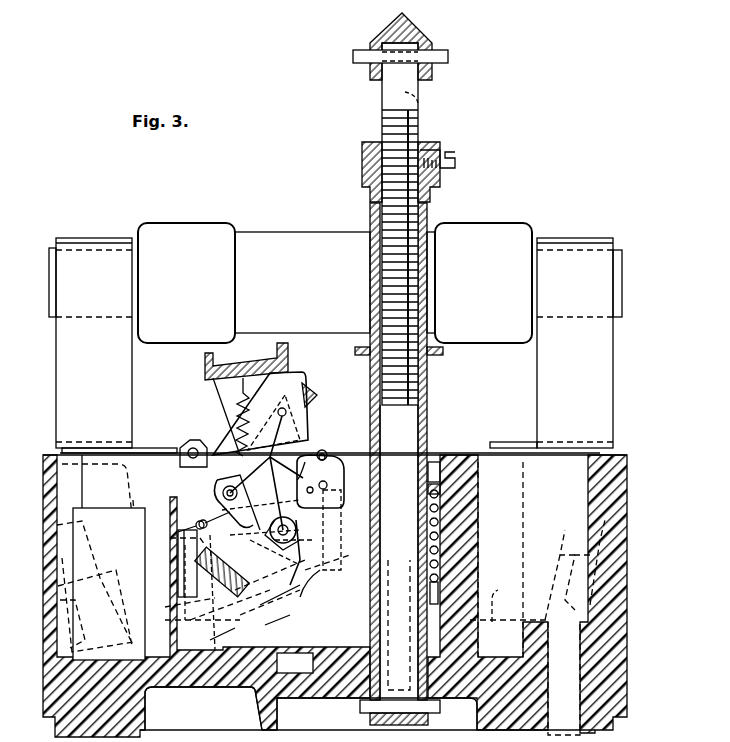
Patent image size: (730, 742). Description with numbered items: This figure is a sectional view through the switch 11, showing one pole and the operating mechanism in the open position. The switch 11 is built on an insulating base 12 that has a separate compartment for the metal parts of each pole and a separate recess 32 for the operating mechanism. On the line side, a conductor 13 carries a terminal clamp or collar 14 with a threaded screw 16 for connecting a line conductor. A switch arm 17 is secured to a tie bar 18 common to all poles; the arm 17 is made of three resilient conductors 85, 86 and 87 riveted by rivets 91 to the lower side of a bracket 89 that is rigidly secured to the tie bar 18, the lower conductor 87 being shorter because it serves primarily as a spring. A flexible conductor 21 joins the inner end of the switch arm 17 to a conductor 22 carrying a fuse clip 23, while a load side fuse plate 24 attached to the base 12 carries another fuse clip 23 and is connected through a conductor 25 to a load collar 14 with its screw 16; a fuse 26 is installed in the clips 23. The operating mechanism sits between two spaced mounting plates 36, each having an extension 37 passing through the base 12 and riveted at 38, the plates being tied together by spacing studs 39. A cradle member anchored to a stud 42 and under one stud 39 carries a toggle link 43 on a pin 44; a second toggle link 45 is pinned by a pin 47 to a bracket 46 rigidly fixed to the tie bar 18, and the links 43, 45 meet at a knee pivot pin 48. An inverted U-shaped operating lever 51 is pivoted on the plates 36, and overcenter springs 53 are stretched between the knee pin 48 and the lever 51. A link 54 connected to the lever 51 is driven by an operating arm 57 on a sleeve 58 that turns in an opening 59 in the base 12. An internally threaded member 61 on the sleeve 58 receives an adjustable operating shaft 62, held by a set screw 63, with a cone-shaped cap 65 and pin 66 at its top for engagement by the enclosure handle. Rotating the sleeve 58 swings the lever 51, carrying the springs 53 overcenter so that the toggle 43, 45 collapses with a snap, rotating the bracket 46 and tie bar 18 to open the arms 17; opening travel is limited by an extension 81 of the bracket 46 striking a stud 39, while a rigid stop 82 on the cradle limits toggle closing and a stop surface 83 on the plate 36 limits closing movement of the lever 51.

The switch 11 is at (501, 386).
The insulating base 12 is at (618, 695).
The conductor 13 is at (488, 606).
The terminal clamp or collar 14 is at (110, 532).
The threaded screw 16 is at (92, 540).
The switch arm 17 is at (160, 634).
The tie bar 18 is at (225, 585).
The flexible conductor 21 is at (180, 538).
The conductor 22 is at (472, 440).
The fuse clip 23 is at (62, 362).
The load side fuse terminal or plate 24 is at (158, 448).
The conductor 25 is at (116, 484).
The fuse 26 is at (308, 235).
The recess 32 is at (222, 690).
The mounting plates 36 is at (302, 452).
The extension 37 is at (303, 640).
The rivet 38 is at (315, 704).
The spacing studs 39 is at (192, 448).
The stud 42 is at (312, 455).
The toggle link 43 is at (276, 458).
The pin 44 is at (282, 428).
The toggle link 45 is at (257, 505).
The bracket 46 is at (282, 552).
The pin 47 is at (280, 545).
The knee pivot pin 48 is at (222, 493).
The operating lever 51 is at (225, 395).
The overcenter springs 53 is at (243, 405).
The link 54 is at (385, 721).
The operating arm 57 is at (443, 352).
The sleeve 58 is at (430, 402).
The opening 59 is at (433, 458).
The internally threaded member 61 is at (362, 160).
The operating shaft 62 is at (386, 118).
The set screw 63 is at (455, 160).
The cap 65 is at (420, 40).
The pin 66 is at (448, 58).
The extension 81 is at (204, 528).
The rigid stop 82 is at (312, 477).
The stop surface 83 is at (308, 432).
The resilient conductor 85 is at (235, 630).
The resilient conductor 86 is at (270, 600).
The resilient conductor 87 is at (304, 590).
The bracket 89 is at (178, 607).
The rivets 91 is at (272, 618).